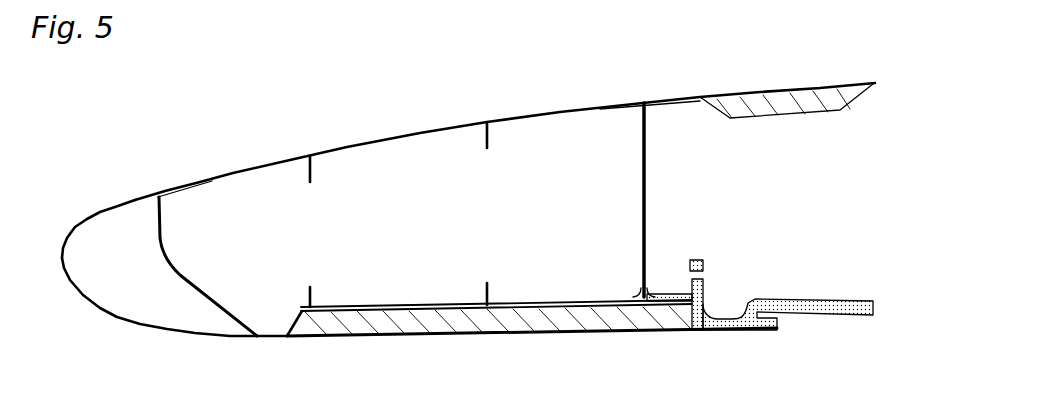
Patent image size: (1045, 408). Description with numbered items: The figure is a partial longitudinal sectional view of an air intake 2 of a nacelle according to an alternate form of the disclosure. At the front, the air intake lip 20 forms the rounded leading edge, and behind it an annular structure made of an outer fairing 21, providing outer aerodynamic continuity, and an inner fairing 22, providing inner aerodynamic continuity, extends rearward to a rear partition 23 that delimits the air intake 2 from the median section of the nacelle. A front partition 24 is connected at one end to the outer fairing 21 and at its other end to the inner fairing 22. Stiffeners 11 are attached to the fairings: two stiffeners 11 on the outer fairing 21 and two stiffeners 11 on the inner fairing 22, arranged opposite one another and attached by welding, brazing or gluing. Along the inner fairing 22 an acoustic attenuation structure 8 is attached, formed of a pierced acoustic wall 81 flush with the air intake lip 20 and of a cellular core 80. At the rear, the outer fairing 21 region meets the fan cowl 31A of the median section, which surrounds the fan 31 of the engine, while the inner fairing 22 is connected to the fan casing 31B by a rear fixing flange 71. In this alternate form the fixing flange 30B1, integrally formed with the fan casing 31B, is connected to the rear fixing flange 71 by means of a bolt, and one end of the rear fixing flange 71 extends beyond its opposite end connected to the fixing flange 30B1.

The air intake 2 is at (468, 209).
The acoustic attenuation structure 8 is at (532, 353).
The stiffeners 11 is at (312, 176).
The air intake lip 20 is at (124, 205).
The outer fairing 21 is at (400, 127).
The inner fairing 22 is at (428, 302).
The rear partition 23 is at (650, 182).
The front partition 24 is at (182, 260).
The fixing flange 30B1 is at (704, 285).
The fan 31 is at (816, 74).
The fan cowl 31A is at (755, 92).
The fan casing 31B is at (838, 299).
The rear fixing flange 71 is at (667, 292).
The cellular core 80 is at (614, 333).
The pierced acoustic wall 81 is at (478, 336).